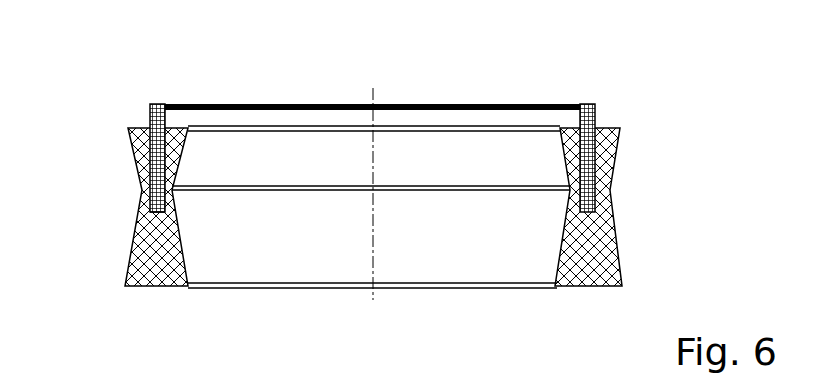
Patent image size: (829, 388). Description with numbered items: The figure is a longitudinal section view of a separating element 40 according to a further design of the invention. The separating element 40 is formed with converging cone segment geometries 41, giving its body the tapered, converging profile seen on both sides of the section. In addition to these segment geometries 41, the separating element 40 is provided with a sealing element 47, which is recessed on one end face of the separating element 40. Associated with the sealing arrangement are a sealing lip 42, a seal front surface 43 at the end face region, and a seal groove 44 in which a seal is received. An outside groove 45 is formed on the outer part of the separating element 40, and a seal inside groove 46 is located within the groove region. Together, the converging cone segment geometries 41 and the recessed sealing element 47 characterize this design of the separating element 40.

The separating element 40 is at (645, 98).
The segment geometries 41 is at (607, 250).
The sealing lip 42 is at (618, 128).
The seal front surface 43 is at (137, 127).
The seal groove 44 is at (143, 190).
The outside groove 45 is at (140, 208).
The seal inside groove 46 is at (165, 207).
The sealing element 47 is at (430, 105).